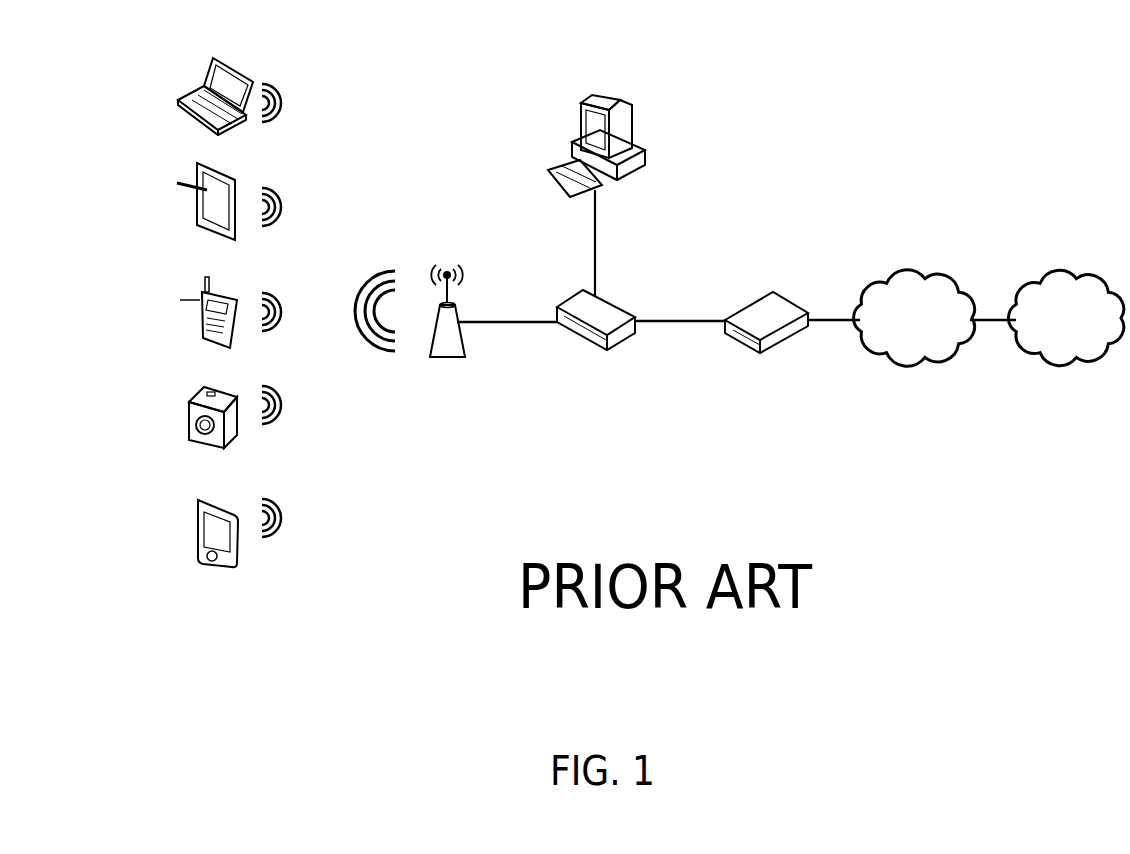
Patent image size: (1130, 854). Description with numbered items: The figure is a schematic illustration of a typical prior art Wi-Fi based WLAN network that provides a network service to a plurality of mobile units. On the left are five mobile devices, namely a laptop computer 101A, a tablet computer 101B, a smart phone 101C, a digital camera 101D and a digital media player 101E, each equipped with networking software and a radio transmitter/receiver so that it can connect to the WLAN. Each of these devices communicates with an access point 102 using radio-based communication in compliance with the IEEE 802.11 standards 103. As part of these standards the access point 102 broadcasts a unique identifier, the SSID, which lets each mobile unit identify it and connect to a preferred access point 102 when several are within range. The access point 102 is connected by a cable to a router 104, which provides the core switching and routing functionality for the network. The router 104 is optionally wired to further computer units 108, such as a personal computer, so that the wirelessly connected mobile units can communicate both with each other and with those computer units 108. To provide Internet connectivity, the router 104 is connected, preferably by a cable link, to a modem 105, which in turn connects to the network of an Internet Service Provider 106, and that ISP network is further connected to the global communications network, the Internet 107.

The laptop computer 101A is at (178, 103).
The tablet computer 101B is at (197, 215).
The smart phone 101C is at (202, 327).
The digital camera 101D is at (189, 413).
The digital media player 101E is at (197, 538).
The access point 102 is at (447, 360).
The IEEE 802.11 standards 103 is at (383, 360).
The router 104 is at (593, 347).
The modem 105 is at (753, 350).
The Internet Service Provider 106 is at (900, 360).
The Internet 107 is at (1045, 360).
The further computer units 108 is at (632, 112).